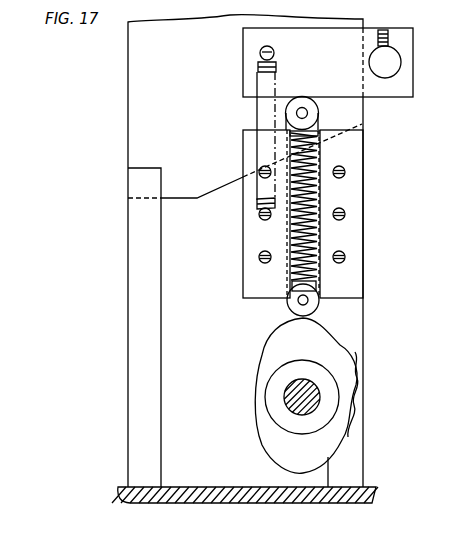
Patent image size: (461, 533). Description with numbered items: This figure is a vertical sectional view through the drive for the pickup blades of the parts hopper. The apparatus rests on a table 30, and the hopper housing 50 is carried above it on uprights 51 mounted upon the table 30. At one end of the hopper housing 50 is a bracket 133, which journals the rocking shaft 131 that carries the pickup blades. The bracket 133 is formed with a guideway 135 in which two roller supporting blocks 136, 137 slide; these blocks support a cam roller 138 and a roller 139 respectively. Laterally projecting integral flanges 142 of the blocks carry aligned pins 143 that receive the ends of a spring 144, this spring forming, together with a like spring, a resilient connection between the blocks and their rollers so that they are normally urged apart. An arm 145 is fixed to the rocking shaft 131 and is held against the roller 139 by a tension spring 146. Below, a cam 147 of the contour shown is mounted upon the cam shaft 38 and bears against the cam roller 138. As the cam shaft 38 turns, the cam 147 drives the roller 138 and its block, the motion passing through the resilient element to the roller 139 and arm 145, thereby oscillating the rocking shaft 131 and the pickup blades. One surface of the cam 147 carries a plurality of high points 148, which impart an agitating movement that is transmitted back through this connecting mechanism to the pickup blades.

The table 30 is at (208, 492).
The cam shaft 38 is at (285, 396).
The hopper housing 50 is at (132, 82).
The uprights 51 is at (130, 380).
The rocking shaft 131 is at (394, 62).
The bracket 133 is at (243, 242).
The guideway 135 is at (308, 212).
The roller supporting block 136 is at (290, 296).
The roller supporting block 137 is at (316, 130).
The cam roller 138 is at (290, 305).
The roller 139 is at (302, 97).
The flanges 142 is at (290, 138).
The pins 143 is at (318, 150).
The spring 144 is at (289, 207).
The arm 145 is at (243, 45).
The tension spring 146 is at (258, 68).
The cam 147 is at (265, 368).
The high points 148 is at (352, 432).